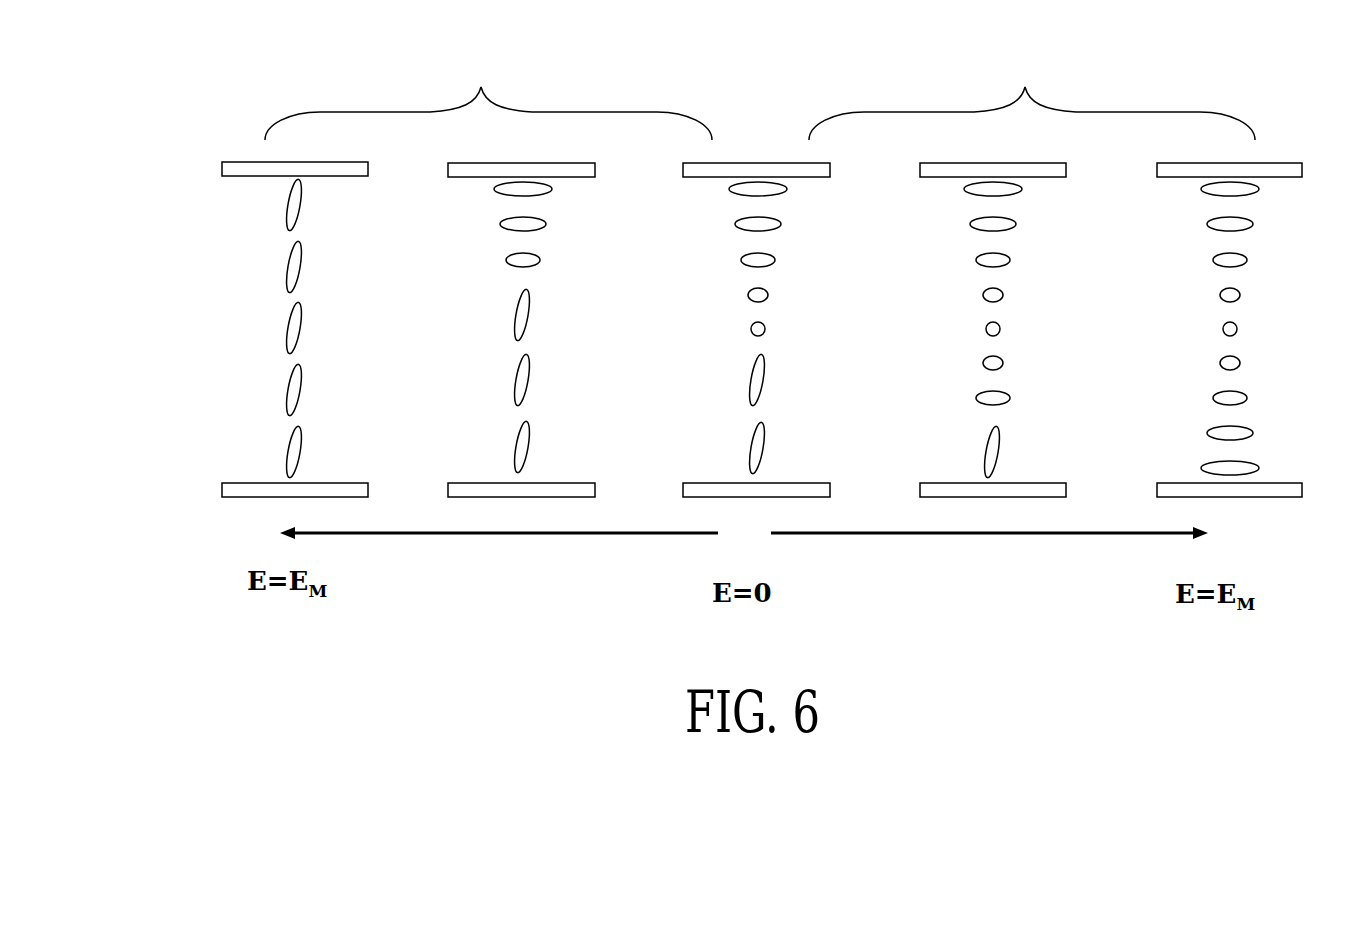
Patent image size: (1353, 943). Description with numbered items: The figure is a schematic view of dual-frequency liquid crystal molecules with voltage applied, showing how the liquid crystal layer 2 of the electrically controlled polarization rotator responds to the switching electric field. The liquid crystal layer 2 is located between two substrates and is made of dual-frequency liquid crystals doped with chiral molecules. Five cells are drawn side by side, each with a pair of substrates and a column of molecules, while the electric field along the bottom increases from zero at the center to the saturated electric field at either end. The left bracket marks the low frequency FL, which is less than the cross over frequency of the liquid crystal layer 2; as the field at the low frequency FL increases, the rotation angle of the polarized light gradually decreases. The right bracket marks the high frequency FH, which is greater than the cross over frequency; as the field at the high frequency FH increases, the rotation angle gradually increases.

The liquid crystal layer 2 is at (249, 285).
The low frequency FL is at (488, 88).
The high frequency FH is at (1032, 88).